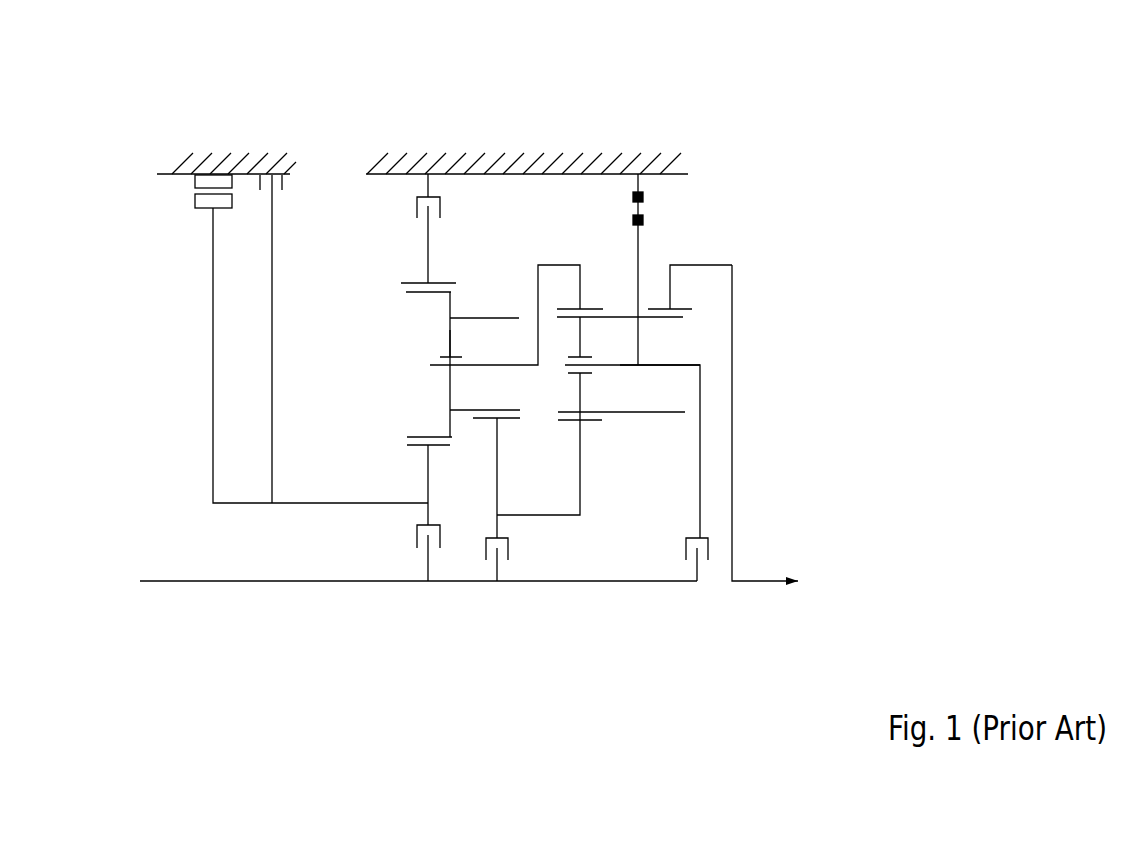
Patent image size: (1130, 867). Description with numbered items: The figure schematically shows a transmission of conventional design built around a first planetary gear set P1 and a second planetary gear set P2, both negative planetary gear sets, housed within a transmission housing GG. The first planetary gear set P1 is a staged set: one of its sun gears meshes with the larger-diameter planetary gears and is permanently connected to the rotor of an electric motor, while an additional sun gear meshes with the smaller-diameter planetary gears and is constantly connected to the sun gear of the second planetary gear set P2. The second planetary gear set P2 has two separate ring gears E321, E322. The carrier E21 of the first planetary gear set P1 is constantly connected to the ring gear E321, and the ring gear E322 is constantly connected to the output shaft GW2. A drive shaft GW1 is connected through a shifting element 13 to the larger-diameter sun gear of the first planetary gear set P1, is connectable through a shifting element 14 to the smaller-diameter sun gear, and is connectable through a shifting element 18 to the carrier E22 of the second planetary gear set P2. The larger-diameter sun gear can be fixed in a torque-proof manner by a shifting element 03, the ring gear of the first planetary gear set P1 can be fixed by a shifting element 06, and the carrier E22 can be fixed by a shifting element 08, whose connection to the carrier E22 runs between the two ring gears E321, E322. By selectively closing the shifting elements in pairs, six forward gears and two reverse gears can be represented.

The shifting element 03 is at (287, 187).
The transmission housing GG is at (430, 174).
The shifting element 06 is at (448, 204).
The first planetary gear set P1 is at (453, 348).
The carrier of the first planetary gear set E21 is at (485, 357).
The ring gear of the second planetary gear set E321 is at (590, 305).
The shifting element 08 is at (647, 208).
The second planetary gear set P2 is at (588, 350).
The ring gear of the second planetary gear set E322 is at (680, 307).
The carrier of the second planetary gear set E22 is at (665, 362).
The drive shaft GW1 is at (293, 583).
The shifting element 13 is at (428, 545).
The shifting element 14 is at (497, 548).
The shifting element 18 is at (697, 548).
The output shaft GW2 is at (753, 587).